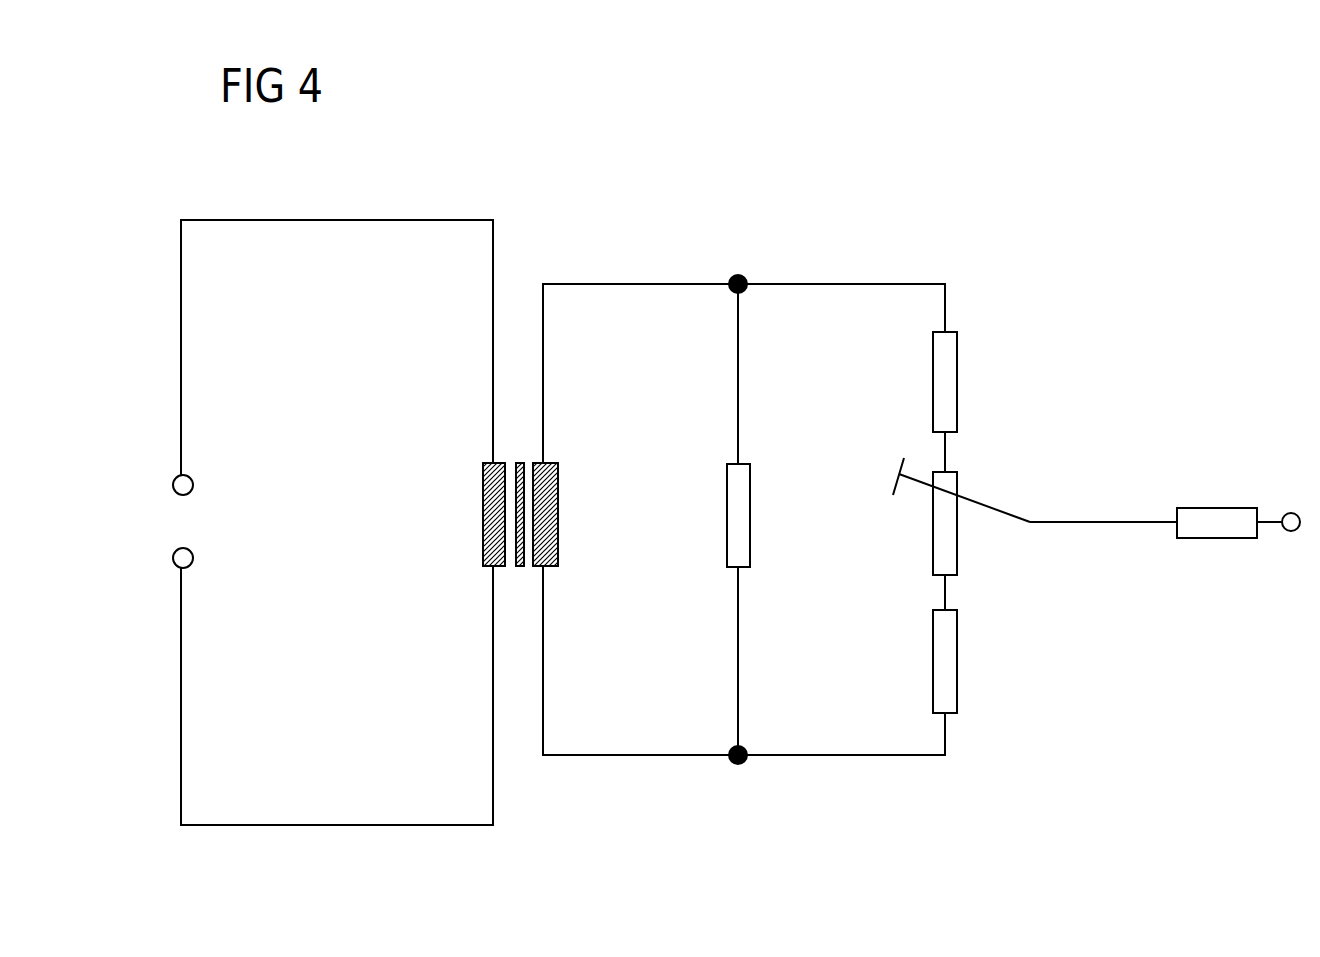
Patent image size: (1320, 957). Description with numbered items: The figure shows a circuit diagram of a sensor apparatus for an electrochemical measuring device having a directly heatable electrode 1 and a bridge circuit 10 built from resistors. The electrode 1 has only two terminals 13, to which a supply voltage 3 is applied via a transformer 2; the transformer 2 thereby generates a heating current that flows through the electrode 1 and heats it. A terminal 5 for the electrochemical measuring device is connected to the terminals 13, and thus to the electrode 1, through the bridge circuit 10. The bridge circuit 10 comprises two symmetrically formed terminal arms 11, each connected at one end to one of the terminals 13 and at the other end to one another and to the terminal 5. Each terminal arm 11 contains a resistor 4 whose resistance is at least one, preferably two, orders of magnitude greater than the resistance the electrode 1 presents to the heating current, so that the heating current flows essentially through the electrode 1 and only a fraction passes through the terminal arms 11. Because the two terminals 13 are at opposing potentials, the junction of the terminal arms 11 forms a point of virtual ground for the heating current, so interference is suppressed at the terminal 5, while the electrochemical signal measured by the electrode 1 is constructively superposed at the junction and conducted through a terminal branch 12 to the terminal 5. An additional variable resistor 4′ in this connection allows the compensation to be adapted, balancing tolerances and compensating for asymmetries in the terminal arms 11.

The electrode 1 is at (742, 520).
The transformer 2 is at (550, 520).
The supply voltage 3 is at (178, 523).
The resistors 4 is at (1003, 647).
The variable resistor 4′ is at (947, 542).
The terminal 5 is at (1293, 513).
The bridge circuit 10 is at (967, 262).
The terminal arms 11 is at (828, 810).
The terminal branch 12 is at (1143, 523).
The terminals 13 is at (717, 810).